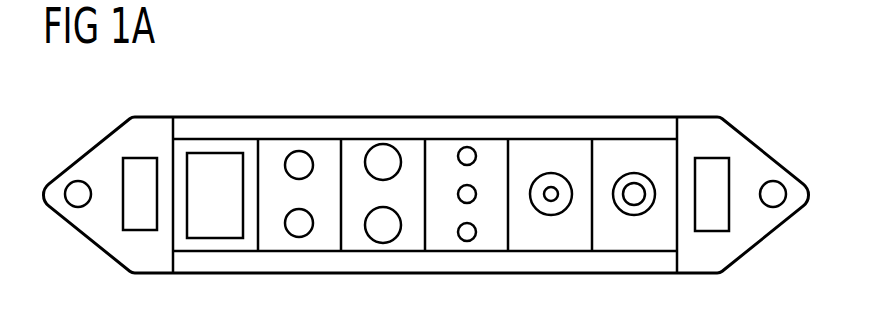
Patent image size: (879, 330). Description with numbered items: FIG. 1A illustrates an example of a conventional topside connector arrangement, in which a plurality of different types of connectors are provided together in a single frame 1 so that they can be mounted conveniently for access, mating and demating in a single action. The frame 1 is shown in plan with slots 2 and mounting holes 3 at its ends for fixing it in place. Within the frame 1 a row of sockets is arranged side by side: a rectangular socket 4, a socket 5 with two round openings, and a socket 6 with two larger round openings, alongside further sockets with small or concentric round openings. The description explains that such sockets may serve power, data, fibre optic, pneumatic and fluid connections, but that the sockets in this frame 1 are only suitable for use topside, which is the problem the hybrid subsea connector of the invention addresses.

The power module housing 1 is at (628, 125).
The mounting slot 2 is at (134, 164).
The mounting hole / flange 3 is at (95, 157).
The rectangular connector opening 4 is at (250, 147).
The connector with two round openings 5 is at (322, 147).
The connector with two larger round openings 6 is at (412, 145).